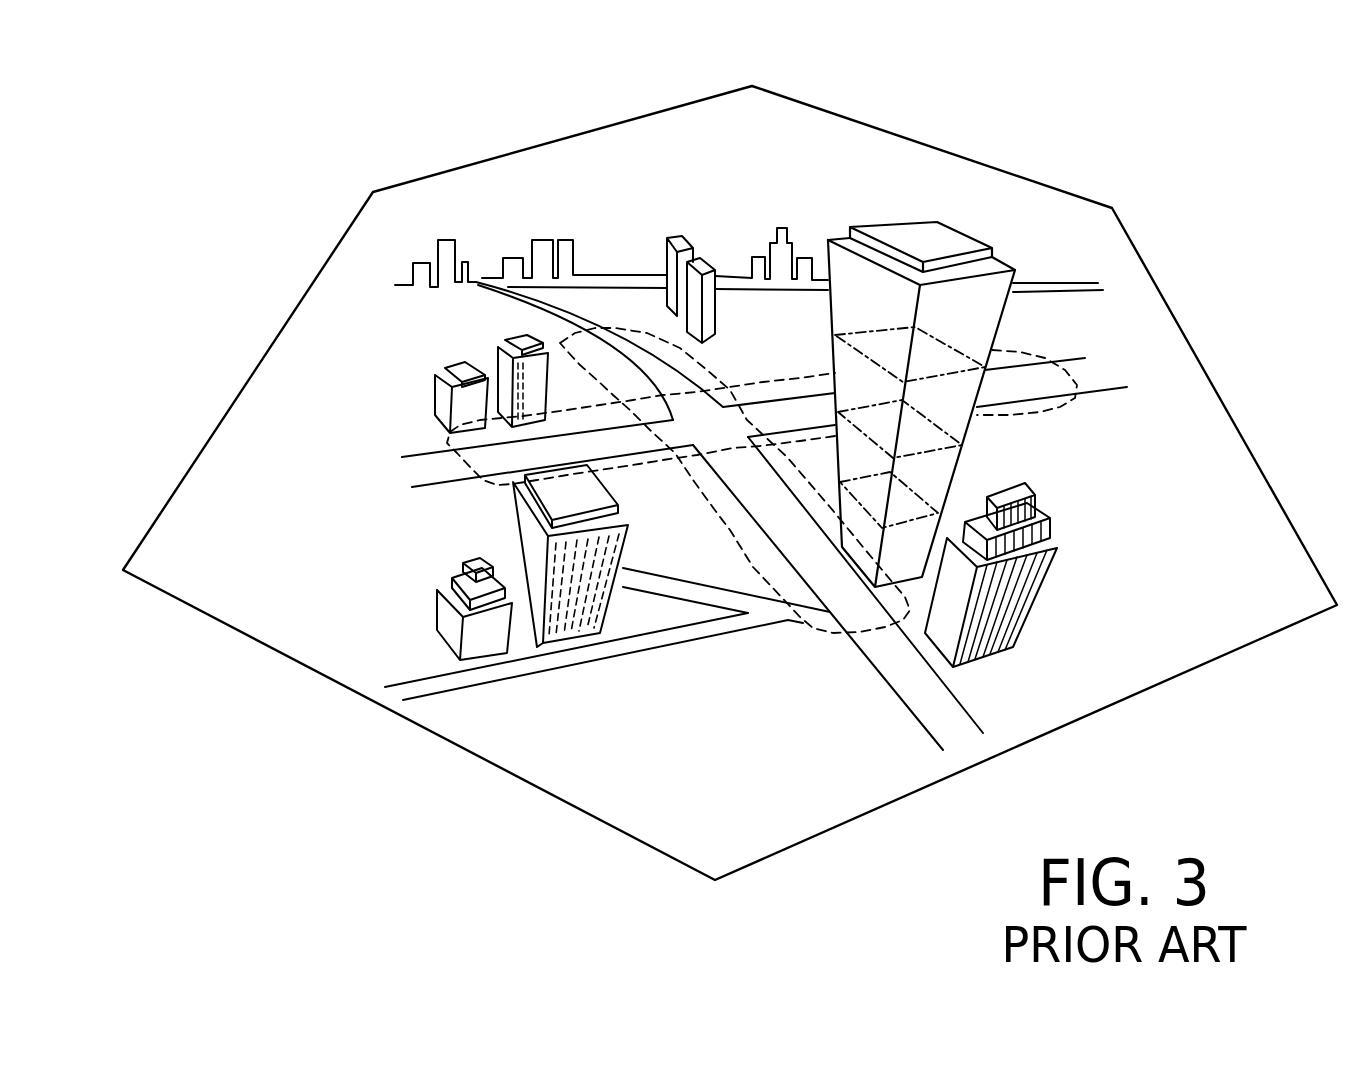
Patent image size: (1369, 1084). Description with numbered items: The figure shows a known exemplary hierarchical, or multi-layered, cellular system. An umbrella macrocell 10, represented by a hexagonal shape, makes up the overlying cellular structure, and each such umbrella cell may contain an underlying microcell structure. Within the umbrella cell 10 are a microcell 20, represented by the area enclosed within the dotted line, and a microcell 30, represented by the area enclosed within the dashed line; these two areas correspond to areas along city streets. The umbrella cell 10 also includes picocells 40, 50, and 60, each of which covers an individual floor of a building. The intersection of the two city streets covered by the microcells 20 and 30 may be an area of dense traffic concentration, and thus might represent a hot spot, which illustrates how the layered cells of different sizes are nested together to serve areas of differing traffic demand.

The umbrella macrocell 10 is at (378, 700).
The microcell 20 is at (620, 328).
The microcell 30 is at (460, 462).
The picocell 40 is at (980, 367).
The picocell 50 is at (938, 423).
The picocell 60 is at (898, 528).